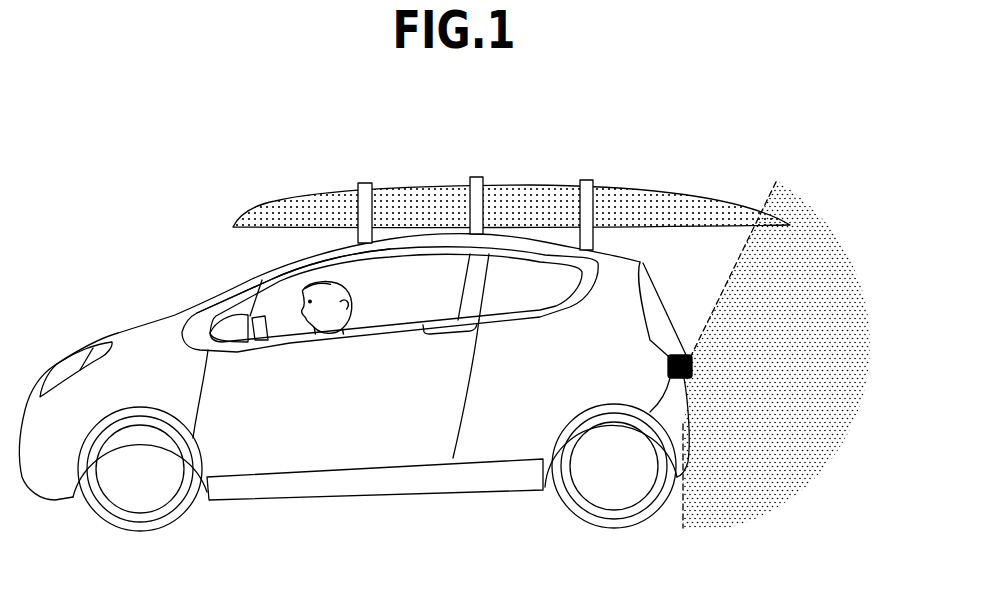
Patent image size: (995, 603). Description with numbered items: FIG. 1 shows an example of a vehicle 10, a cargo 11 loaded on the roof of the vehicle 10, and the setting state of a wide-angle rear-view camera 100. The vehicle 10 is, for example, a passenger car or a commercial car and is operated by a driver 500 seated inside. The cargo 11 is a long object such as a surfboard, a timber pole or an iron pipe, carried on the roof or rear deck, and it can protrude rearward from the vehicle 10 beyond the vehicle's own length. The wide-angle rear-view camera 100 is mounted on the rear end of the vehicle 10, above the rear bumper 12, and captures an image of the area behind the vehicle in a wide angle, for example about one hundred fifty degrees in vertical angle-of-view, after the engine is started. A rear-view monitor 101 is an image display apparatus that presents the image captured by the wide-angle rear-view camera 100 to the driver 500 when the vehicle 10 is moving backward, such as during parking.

The vehicle 10 is at (362, 453).
The cargo 11 is at (430, 195).
The rear bumper 12 is at (695, 455).
The wide-angle rear-view camera 100 is at (693, 366).
The rear-view monitor 101 is at (234, 282).
The driver 500 is at (300, 302).